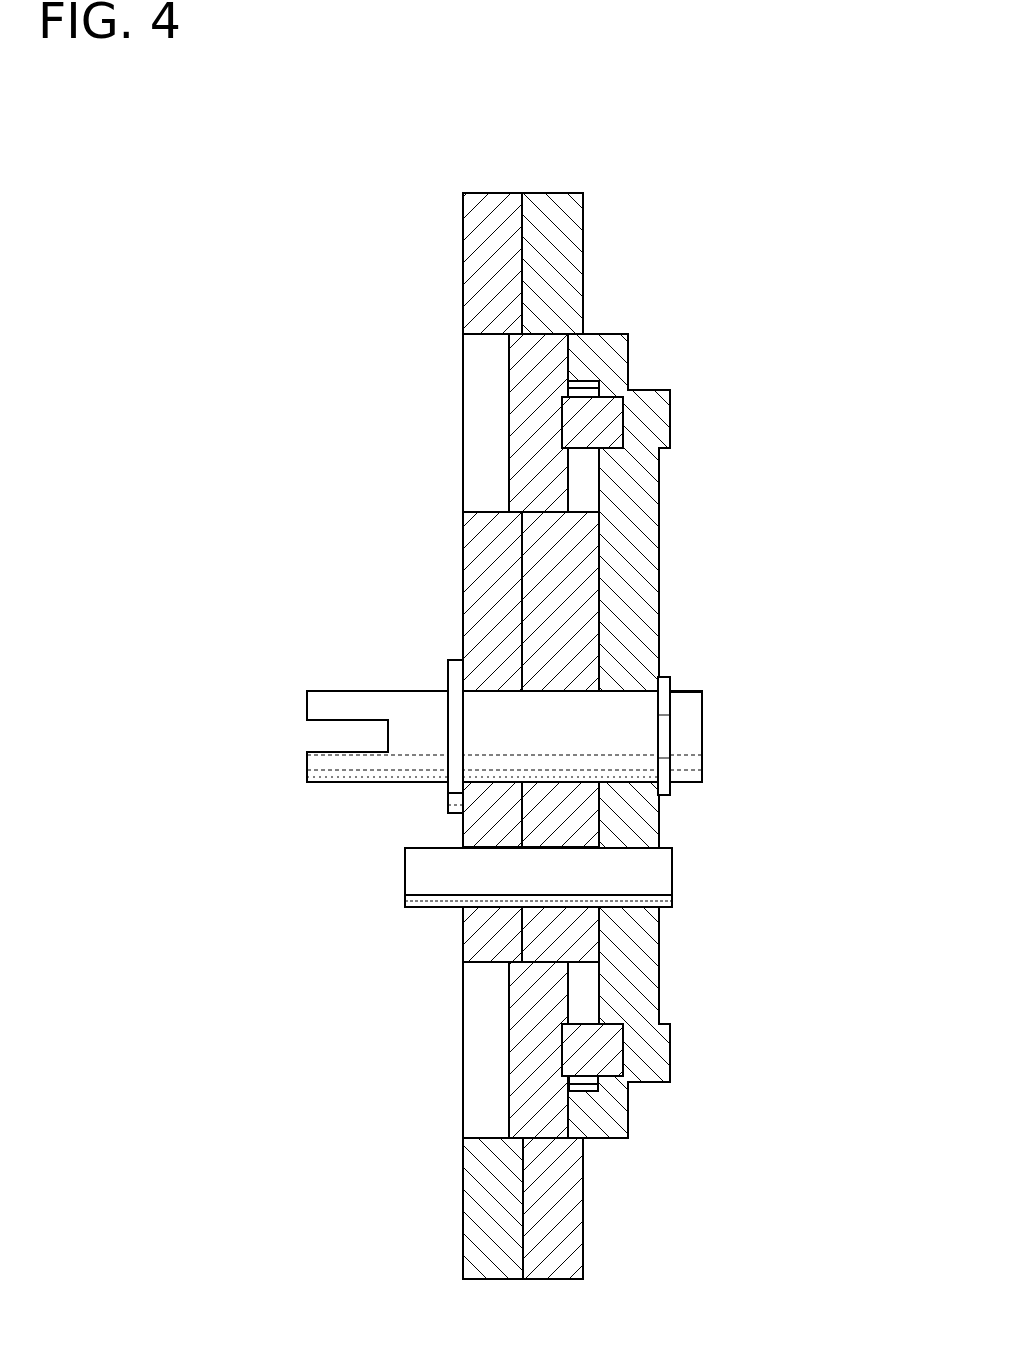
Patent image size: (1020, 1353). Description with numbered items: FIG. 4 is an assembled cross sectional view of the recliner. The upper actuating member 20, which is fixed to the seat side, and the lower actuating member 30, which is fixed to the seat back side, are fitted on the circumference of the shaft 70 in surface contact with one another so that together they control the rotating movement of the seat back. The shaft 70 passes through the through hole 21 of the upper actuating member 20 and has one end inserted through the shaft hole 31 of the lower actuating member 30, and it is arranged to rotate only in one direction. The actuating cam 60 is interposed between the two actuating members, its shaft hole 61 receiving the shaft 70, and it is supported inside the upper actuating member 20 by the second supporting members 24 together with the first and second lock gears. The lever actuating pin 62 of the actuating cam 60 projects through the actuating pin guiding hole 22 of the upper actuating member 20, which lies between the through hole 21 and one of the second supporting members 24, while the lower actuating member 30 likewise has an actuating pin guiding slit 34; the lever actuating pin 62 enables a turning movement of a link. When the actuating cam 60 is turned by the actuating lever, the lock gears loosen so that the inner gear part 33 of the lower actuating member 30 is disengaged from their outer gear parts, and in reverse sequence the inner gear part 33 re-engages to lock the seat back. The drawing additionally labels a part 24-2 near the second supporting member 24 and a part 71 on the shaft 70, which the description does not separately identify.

The upper actuating member 20 is at (435, 288).
The through hole 21 is at (487, 780).
The actuating pin guiding hole 22 is at (437, 900).
The second symmetrical supporting members 24 is at (555, 483).
The pin 24-2 is at (608, 405).
The lower actuating member 30 is at (612, 224).
The shaft hole 31 is at (672, 723).
The inner gear part 33 is at (587, 1082).
The actuating pin guiding slit 34 is at (655, 903).
The actuating cam 60 is at (580, 557).
The shaft hole 61 is at (563, 852).
The lever actuating pin 62 is at (433, 870).
The shaft 70 is at (308, 660).
The fork 71 is at (327, 745).